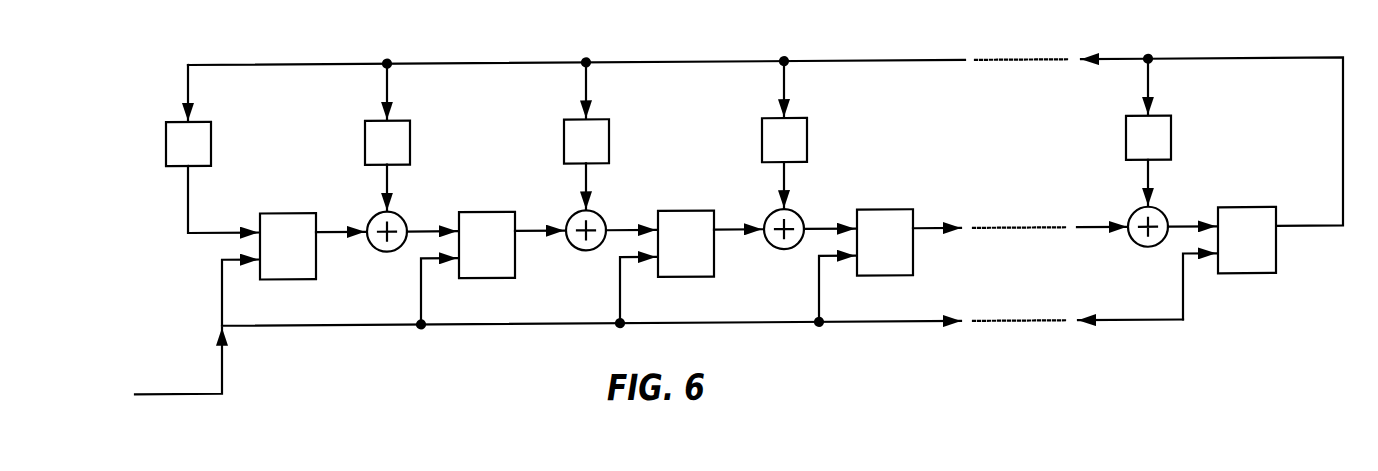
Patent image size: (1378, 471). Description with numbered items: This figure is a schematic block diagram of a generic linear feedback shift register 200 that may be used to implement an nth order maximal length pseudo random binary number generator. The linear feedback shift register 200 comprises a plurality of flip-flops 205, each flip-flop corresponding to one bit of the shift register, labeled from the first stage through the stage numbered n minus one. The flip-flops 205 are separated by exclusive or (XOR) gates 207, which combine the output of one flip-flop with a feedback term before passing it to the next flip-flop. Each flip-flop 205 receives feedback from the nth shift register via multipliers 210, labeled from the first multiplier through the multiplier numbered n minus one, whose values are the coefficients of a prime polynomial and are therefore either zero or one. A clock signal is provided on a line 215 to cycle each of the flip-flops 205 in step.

The linear feedback shift register 200 is at (1188, 43).
The flip-flops 205 is at (316, 280).
The exclusive or (XOR) gates 207 is at (401, 219).
The multipliers 210 is at (208, 122).
The line 215 is at (224, 367).